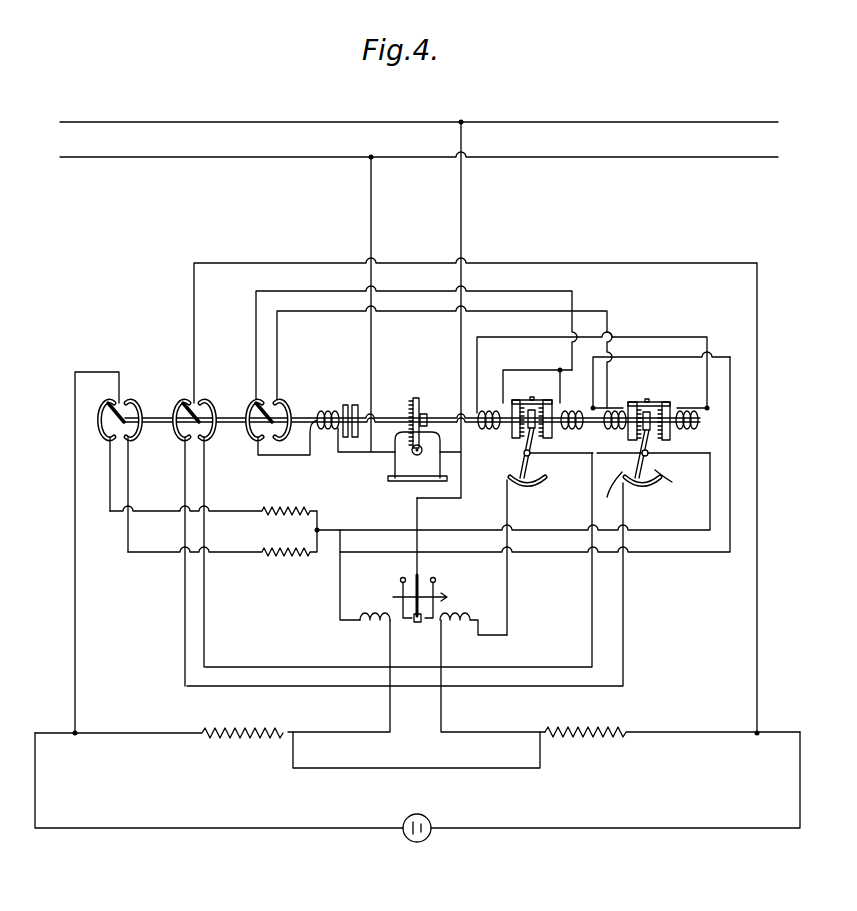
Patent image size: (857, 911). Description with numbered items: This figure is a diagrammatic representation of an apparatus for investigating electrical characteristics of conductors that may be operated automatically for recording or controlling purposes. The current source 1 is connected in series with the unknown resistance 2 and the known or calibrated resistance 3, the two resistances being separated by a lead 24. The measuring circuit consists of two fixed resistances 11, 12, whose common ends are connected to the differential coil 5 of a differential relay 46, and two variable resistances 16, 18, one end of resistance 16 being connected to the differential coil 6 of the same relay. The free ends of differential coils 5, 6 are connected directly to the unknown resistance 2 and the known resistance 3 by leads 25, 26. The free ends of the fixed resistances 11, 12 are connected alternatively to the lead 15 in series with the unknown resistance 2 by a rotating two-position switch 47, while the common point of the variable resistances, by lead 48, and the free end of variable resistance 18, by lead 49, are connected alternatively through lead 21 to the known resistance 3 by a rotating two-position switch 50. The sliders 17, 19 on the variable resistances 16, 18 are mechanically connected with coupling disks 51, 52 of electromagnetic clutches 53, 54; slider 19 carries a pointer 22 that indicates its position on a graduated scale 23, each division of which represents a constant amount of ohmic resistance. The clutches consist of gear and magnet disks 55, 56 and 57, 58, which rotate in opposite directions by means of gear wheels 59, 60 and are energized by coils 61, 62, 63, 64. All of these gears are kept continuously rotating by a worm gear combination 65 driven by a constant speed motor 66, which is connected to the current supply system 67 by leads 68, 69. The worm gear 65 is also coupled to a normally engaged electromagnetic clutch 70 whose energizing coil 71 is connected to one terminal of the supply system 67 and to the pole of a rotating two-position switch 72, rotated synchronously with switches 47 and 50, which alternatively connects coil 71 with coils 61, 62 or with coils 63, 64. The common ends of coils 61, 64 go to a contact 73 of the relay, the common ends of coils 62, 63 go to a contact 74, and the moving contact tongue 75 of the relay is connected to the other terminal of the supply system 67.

The current source 1 is at (405, 835).
The unknown resistance 2 is at (250, 742).
The known or calibrated resistance 3 is at (600, 742).
The differential coil 5 is at (368, 624).
The differential coil 6 is at (465, 617).
The fixed resistance 11 is at (297, 510).
The fixed resistance 12 is at (292, 556).
The lead 15 is at (77, 600).
The variable resistance 16 is at (530, 488).
The moving contact arm or slider 17 is at (548, 460).
The variable resistance 18 is at (650, 488).
The moving contact arm or slider 19 is at (608, 495).
The lead 21 is at (755, 625).
The pointer 22 is at (640, 457).
The graduated scale 23 is at (672, 471).
The lead 24 is at (445, 770).
The lead 25 is at (388, 713).
The lead 26 is at (443, 716).
The differential relay 46 is at (448, 592).
The rotating two-position switch 47 is at (132, 402).
The lead 48 is at (590, 600).
The lead 49 is at (625, 600).
The rotating two-position switch 50 is at (208, 402).
The coupling disk 51 is at (518, 447).
The coupling disk 52 is at (658, 445).
The electromagnetic clutch 53 is at (530, 396).
The electromagnetic clutch 54 is at (693, 379).
The gear and magnet disk 55 is at (514, 436).
The gear and magnet disk 56 is at (552, 436).
The gear and magnet disk 57 is at (630, 436).
The gear and magnet disk 58 is at (670, 435).
The gear wheel 59 is at (538, 408).
The gear wheel 60 is at (652, 410).
The coil 61 is at (490, 410).
The coil 62 is at (573, 410).
The coil 63 is at (614, 410).
The coil 64 is at (697, 410).
The worm gear combination 65 is at (421, 400).
The constant speed motor 66 is at (396, 460).
The current feed line or supply system 67 is at (290, 157).
The lead 68 is at (373, 205).
The lead 69 is at (459, 226).
The normally engaged electromagnetic clutch 70 is at (352, 404).
The energizing coil 71 is at (328, 410).
The rotating two-position switch 72 is at (283, 400).
The contact 73 is at (401, 612).
The contact 74 is at (437, 608).
The moving contact tongue 75 is at (417, 622).